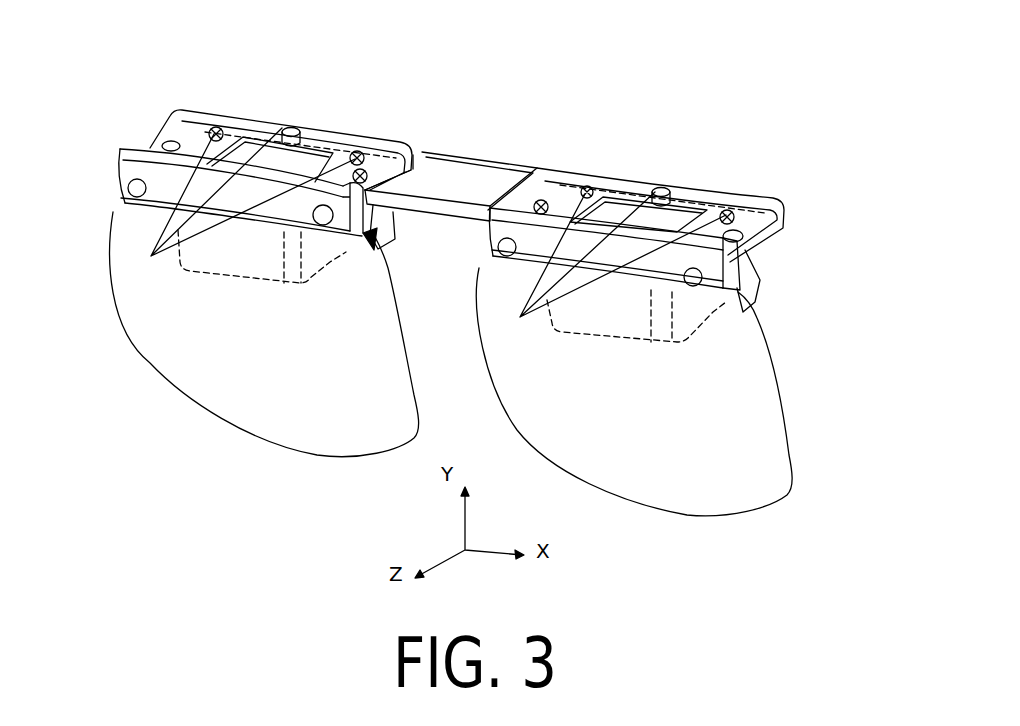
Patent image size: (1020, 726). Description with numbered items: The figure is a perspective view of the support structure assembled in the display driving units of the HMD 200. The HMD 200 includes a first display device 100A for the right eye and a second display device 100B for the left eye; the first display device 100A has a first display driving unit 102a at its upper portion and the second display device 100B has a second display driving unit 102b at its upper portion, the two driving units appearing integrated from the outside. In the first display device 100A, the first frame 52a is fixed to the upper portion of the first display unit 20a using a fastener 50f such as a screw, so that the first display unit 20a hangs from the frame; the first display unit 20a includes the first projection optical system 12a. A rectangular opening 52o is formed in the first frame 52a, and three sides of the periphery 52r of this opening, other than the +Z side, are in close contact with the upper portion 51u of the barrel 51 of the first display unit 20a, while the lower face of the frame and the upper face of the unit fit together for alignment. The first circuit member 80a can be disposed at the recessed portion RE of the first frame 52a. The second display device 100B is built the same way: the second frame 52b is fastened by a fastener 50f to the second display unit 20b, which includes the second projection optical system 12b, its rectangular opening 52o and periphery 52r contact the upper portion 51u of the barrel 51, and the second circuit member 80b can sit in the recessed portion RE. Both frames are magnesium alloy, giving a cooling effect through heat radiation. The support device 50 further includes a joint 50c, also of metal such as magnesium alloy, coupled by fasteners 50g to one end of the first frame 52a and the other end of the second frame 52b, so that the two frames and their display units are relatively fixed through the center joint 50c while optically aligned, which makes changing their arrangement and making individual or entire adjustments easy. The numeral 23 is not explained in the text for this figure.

The HMD 200 is at (543, 97).
The first display device 100A is at (393, 79).
The second display device 100B is at (762, 139).
The first display driving unit 102a is at (308, 78).
The second display driving unit 102b is at (681, 136).
The first circuit member 80a is at (182, 117).
The second circuit member 80b is at (782, 206).
The support device 50 is at (411, 284).
The joint 50c is at (454, 180).
The fastener 50g is at (381, 209).
The fastener 50f is at (212, 130).
The first frame 52a is at (258, 132).
The second frame 52b is at (627, 192).
The rectangular opening 52o is at (226, 133).
The periphery 52r is at (428, 238).
The upper portion 51u is at (687, 178).
The barrel 51 is at (243, 284).
The first projection optical system 12a is at (380, 222).
The second projection optical system 12b is at (753, 274).
The first display unit 20a is at (234, 453).
The second display unit 20b is at (631, 519).
The light guide plate (103a/103b) 23 is at (320, 458).
The recessed portion RE is at (188, 142).